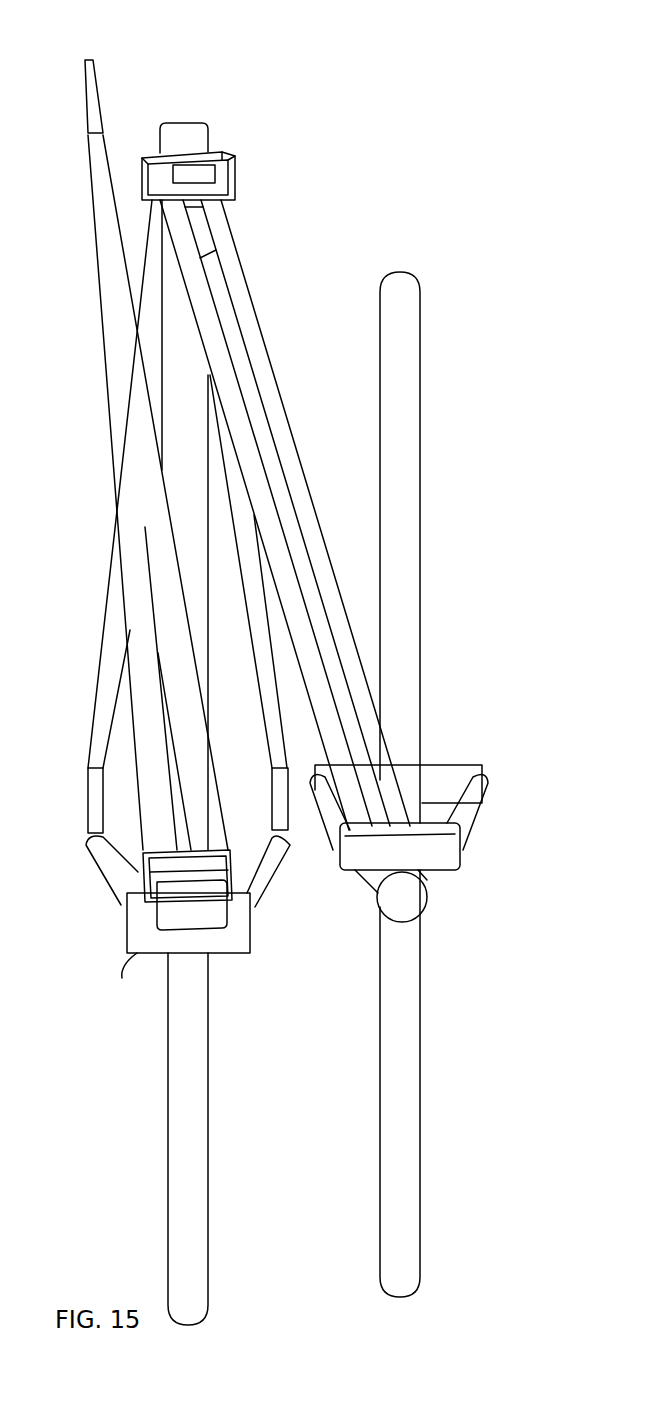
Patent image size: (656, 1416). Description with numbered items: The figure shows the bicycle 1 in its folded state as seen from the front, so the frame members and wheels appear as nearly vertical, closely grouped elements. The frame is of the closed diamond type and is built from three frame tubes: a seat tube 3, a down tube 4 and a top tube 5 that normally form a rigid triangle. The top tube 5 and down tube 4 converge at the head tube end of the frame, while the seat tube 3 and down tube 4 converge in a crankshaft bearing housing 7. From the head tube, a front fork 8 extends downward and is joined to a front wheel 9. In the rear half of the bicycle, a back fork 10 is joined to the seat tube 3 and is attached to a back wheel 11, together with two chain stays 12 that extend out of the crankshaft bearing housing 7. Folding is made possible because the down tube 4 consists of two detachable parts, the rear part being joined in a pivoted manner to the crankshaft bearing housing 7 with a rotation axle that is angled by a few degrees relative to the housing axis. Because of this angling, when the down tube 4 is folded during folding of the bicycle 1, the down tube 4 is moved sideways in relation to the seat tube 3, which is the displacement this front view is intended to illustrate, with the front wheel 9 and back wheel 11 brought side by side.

The bicycle 1 is at (350, 110).
The seat tube 3 is at (208, 128).
The down tube 4 is at (100, 293).
The top tube 5 is at (273, 367).
The crankshaft bearing housing 7 is at (137, 965).
The front fork 8 is at (475, 822).
The front wheel 9 is at (425, 1065).
The back fork 10 is at (98, 668).
The back wheel 11 is at (165, 1085).
The chain stays 12 is at (100, 873).